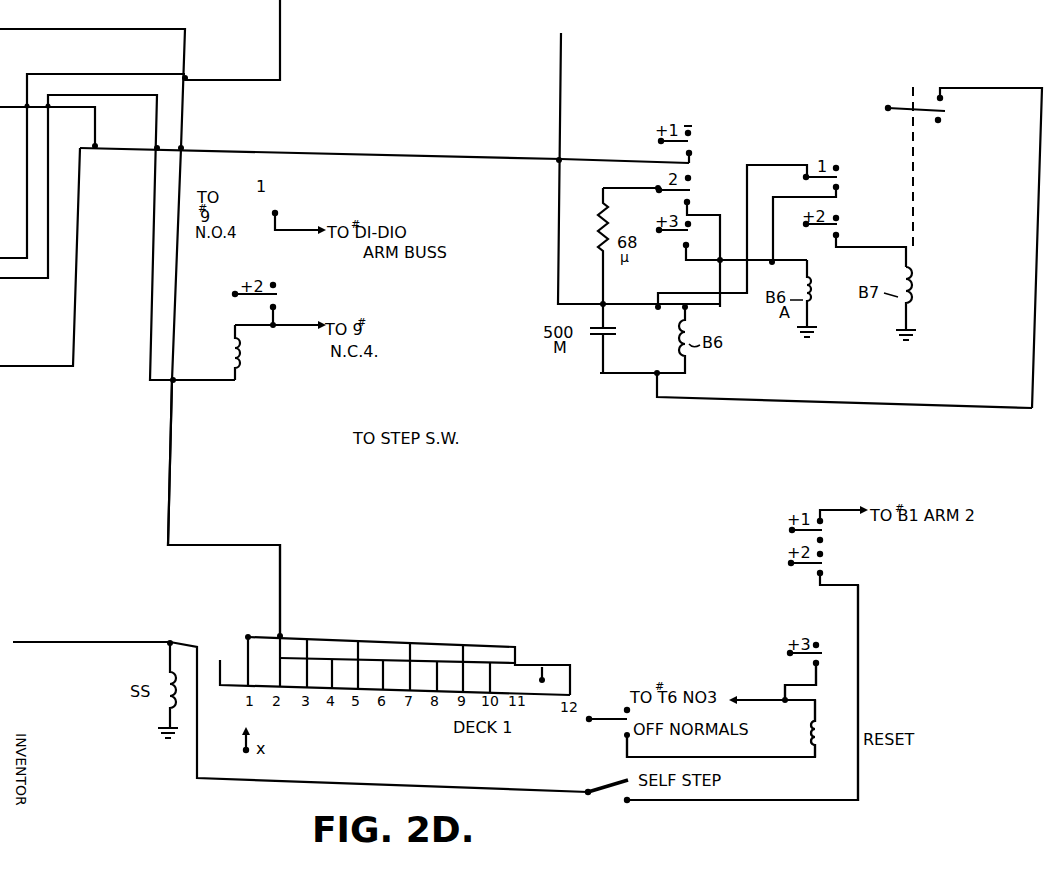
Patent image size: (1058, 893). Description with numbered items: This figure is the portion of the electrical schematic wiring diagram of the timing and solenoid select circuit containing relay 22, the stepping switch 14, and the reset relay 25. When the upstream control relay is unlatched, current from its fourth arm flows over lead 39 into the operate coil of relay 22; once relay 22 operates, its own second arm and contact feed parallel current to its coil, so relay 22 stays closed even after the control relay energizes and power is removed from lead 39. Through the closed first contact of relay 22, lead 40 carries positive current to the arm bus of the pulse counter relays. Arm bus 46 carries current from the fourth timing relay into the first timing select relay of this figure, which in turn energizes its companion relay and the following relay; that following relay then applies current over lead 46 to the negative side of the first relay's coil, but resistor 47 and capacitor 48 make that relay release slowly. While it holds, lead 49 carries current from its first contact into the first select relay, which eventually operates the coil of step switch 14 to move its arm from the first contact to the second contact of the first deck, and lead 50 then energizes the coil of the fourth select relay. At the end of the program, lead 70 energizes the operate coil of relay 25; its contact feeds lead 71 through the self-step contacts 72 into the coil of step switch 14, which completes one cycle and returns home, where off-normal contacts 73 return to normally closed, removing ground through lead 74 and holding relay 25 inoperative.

The lead 49 is at (417, 156).
The lead 40 is at (295, 228).
The lead 39 is at (279, 305).
The relay 22 is at (231, 356).
The lead 50 is at (169, 498).
The resistor 47 is at (616, 214).
The capacitor 48 is at (602, 337).
The arm bus 46 is at (982, 88).
The stepping switch 14 is at (154, 690).
The off-normal contacts 73 is at (606, 717).
The lead 70 is at (784, 698).
The relay 25 is at (860, 738).
The lead 74 is at (716, 757).
The self-step contacts 72 is at (610, 798).
The lead 71 is at (830, 803).